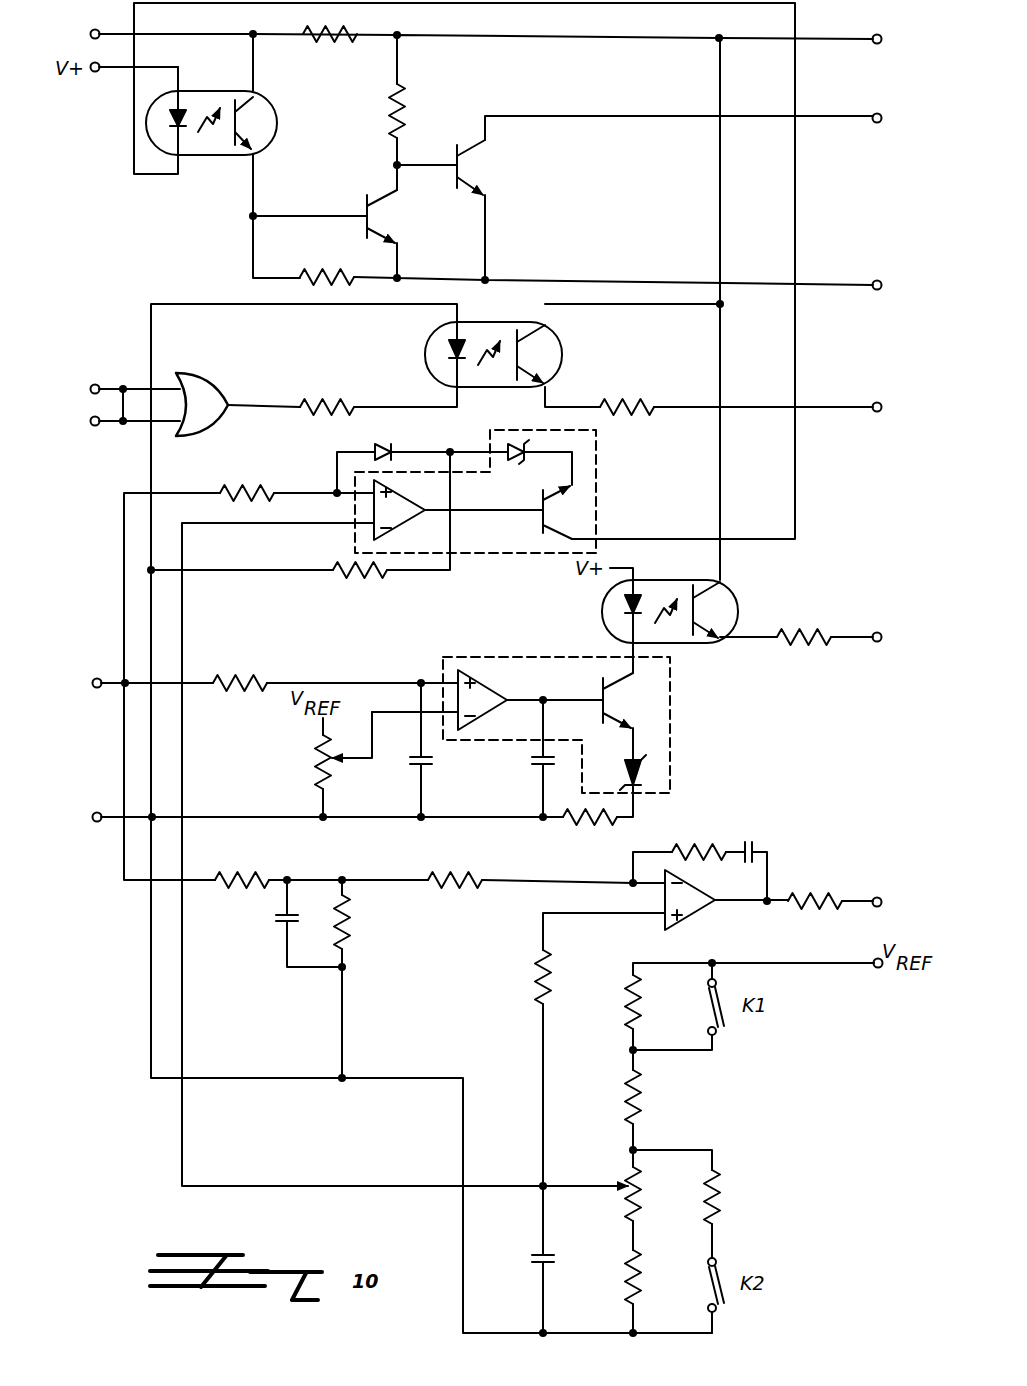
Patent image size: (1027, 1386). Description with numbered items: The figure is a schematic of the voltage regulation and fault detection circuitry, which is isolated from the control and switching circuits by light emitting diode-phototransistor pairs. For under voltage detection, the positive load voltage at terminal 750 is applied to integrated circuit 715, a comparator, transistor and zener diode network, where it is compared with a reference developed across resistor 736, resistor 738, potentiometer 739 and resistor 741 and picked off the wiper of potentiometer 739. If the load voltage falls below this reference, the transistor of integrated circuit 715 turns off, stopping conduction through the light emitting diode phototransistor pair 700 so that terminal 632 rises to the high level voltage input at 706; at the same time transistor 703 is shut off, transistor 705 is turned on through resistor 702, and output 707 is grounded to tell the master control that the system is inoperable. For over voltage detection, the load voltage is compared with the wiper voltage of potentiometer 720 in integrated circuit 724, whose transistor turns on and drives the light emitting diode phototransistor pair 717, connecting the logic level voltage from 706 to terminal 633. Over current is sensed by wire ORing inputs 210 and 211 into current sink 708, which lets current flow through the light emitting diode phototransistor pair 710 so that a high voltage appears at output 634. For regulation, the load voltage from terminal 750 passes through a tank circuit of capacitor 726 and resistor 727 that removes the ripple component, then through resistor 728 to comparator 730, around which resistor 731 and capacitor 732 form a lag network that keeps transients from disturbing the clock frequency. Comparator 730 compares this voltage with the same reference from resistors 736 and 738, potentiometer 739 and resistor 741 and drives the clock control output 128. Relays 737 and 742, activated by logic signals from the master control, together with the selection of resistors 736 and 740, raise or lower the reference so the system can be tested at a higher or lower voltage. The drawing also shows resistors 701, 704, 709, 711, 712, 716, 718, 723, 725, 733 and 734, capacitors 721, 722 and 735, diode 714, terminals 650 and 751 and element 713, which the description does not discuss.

The under voltage fault terminal 632 is at (155, 23).
The light emitting diode phototransistor pair 700 is at (240, 158).
The resistor 701 is at (342, 42).
The resistor 702 is at (405, 122).
The transistor 703 is at (376, 218).
The resistor 704 is at (342, 274).
The transistor 705 is at (470, 176).
The high level voltage input 706 is at (898, 30).
The output terminal 707 is at (898, 110).
The output terminal 650 is at (900, 286).
The over current signal input 210 is at (75, 380).
The over current signal input 211 is at (75, 427).
The current sink 708 is at (205, 385).
The resistor 709 is at (328, 395).
The light emitting diode phototransistor pair 710 is at (514, 322).
The resistor 711 is at (628, 400).
The over current fault output 634 is at (900, 405).
The resistor 712 is at (272, 488).
The operational amplifier 713 is at (399, 510).
The diode 714 is at (378, 450).
The integrated circuit 715 is at (596, 455).
The resistor 716 is at (385, 578).
The light emitting diode phototransistor pair 717 is at (648, 580).
The resistor 718 is at (780, 637).
The over voltage fault terminal 633 is at (900, 628).
The potentiometer 720 is at (332, 762).
The capacitor 721 is at (432, 764).
The capacitor 722 is at (540, 766).
The resistor 723 is at (598, 832).
The integrated circuit 724 is at (670, 706).
The load voltage terminal 750 is at (74, 685).
The input terminal 751 is at (72, 820).
The resistor 725 is at (254, 878).
The capacitor 726 is at (276, 920).
The resistor 727 is at (362, 921).
The resistor 728 is at (440, 890).
The comparator 730 is at (700, 920).
The resistor 731 is at (716, 850).
The capacitor 732 is at (752, 846).
The resistor 733 is at (828, 896).
The clock control output 128 is at (900, 901).
The resistor 734 is at (551, 978).
The capacitor 735 is at (532, 1257).
The resistor 736 is at (626, 1006).
The relay K1 737 is at (708, 1004).
The resistor 738 is at (652, 1098).
The potentiometer 739 is at (652, 1198).
The resistor 740 is at (730, 1198).
The resistor 741 is at (626, 1267).
The relay K2 742 is at (708, 1282).